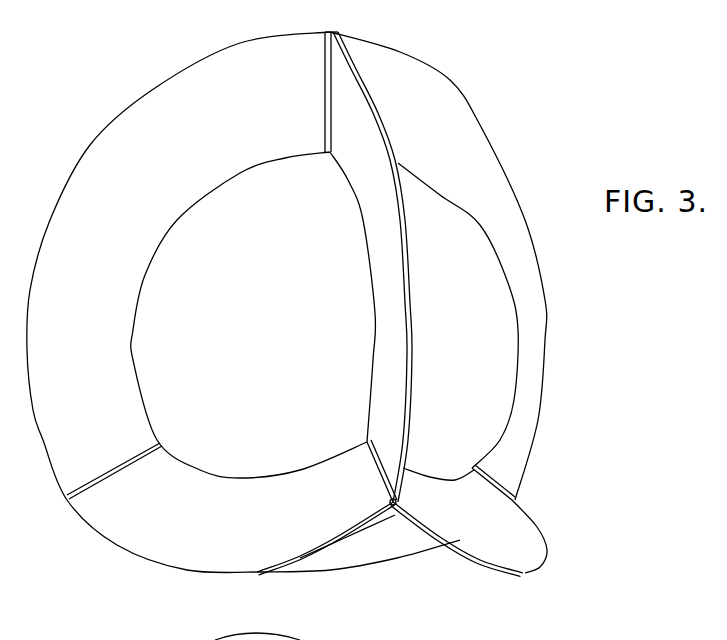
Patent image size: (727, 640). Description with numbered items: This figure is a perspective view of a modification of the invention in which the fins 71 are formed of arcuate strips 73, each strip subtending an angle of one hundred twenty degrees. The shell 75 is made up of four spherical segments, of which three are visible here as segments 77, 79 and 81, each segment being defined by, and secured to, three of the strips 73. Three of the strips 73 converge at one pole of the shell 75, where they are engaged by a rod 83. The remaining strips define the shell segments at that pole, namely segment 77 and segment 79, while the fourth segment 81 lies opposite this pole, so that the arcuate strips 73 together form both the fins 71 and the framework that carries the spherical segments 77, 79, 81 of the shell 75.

The fins 71 is at (493, 173).
The arcuate strips 73 is at (365, 110).
The shell 75 is at (222, 457).
The spherical segment 77 is at (222, 197).
The spherical segment 79 is at (498, 286).
The spherical segment 81 is at (392, 513).
The rod 83 is at (325, 48).